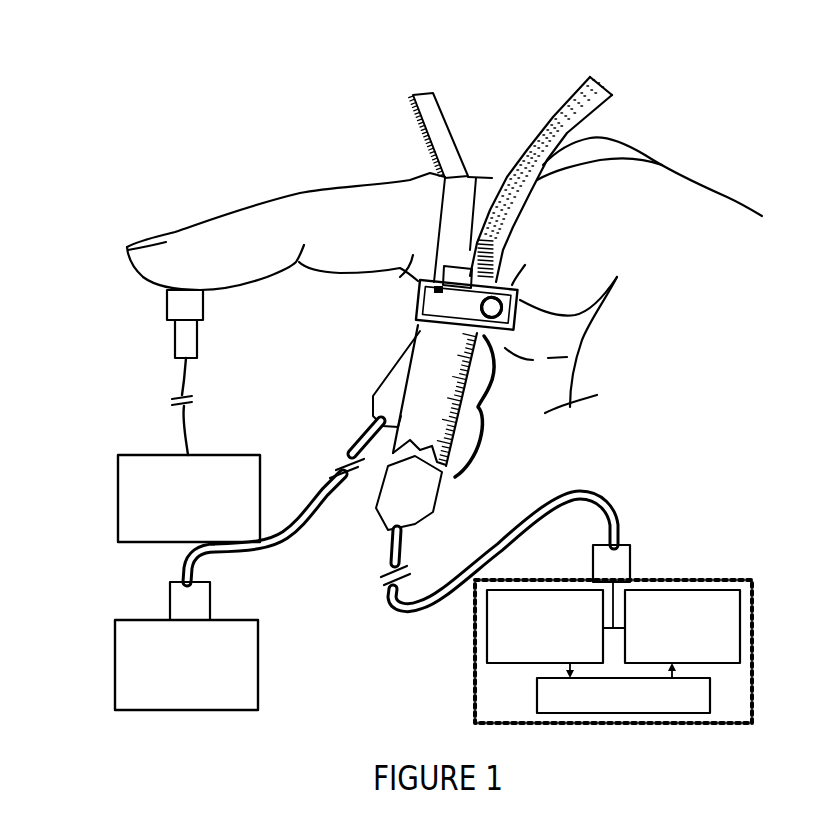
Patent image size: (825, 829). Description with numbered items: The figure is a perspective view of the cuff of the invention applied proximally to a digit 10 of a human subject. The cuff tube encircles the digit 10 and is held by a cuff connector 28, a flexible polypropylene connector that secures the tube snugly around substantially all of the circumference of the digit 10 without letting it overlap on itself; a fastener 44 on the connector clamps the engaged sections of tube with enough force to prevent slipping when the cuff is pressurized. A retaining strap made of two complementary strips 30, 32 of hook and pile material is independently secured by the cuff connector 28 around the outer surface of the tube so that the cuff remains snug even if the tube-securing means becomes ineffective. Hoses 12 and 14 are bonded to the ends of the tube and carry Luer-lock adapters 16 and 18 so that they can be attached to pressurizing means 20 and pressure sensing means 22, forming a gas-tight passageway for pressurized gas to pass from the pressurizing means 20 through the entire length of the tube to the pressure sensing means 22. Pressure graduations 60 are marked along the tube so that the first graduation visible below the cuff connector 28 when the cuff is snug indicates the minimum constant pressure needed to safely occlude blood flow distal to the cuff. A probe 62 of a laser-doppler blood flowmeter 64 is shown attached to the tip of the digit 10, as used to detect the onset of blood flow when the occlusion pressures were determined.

The digit 10 is at (358, 184).
The hose 12 is at (264, 548).
The hose 14 is at (616, 512).
The Luer-lock adapter 16 is at (170, 602).
The Luer-lock adapter 18 is at (632, 558).
The pressurizing means 20 is at (702, 578).
The pressure sensing means 22 is at (115, 633).
The cuff connector 28 is at (538, 306).
The complementary strip of hook and pile material 30 is at (606, 98).
The complementary strip of hook and pile material 32 is at (440, 112).
The fastener 44 is at (515, 325).
The pressure graduations 60 is at (480, 407).
The probe 62 is at (168, 305).
The laser-doppler blood flowmeter 64 is at (143, 455).